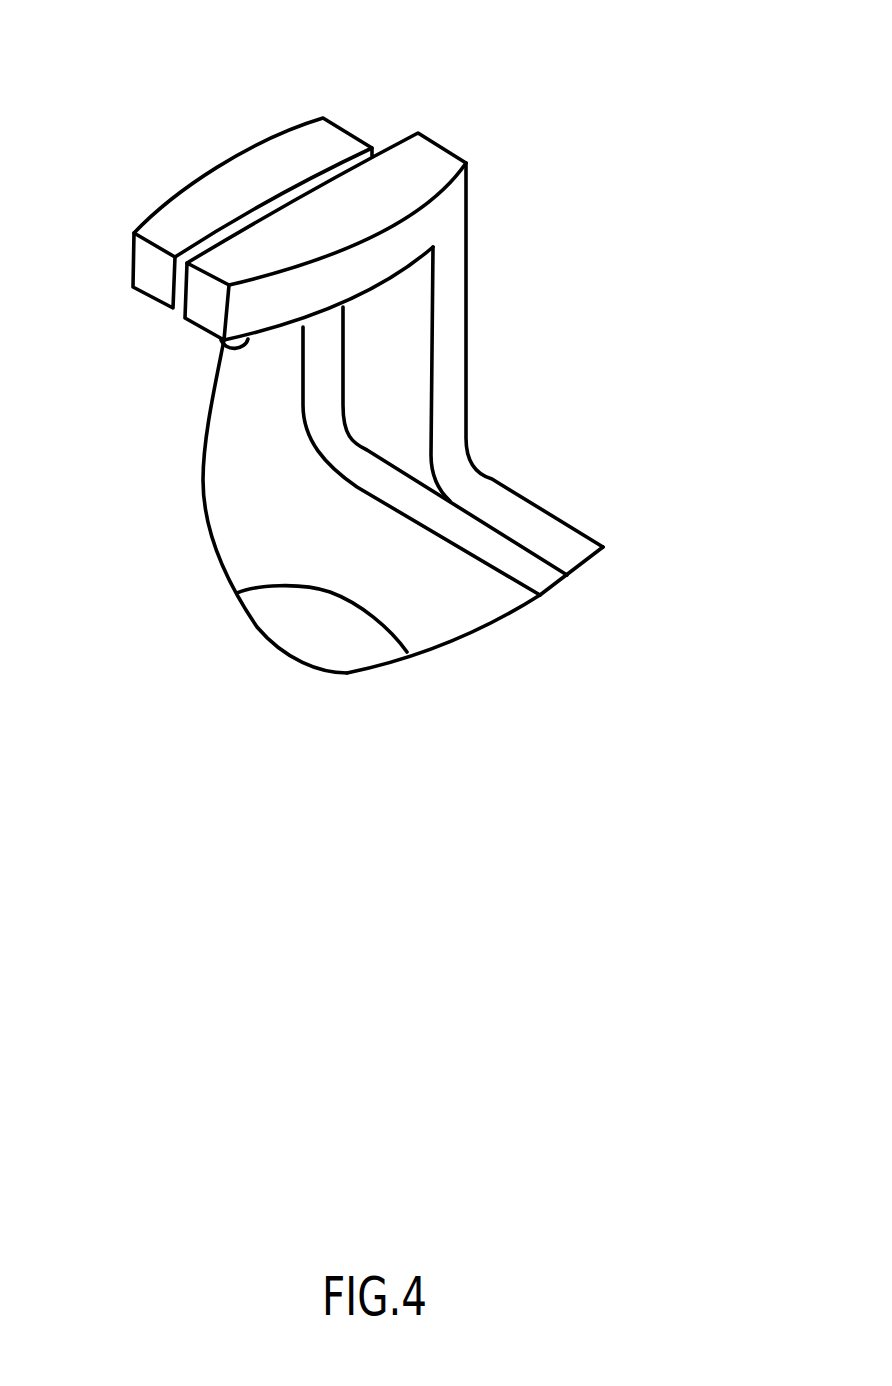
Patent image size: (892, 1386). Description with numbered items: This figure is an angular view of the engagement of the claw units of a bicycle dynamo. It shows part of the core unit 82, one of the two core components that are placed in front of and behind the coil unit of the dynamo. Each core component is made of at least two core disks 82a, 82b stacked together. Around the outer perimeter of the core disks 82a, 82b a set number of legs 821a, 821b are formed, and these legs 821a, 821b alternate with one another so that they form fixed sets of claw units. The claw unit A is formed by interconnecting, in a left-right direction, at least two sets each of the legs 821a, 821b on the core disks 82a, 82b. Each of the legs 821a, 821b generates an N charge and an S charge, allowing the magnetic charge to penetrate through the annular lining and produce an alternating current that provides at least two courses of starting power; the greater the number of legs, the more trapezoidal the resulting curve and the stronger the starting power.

The core unit 82 is at (442, 446).
The core disk 82a is at (535, 567).
The core disk 82b is at (550, 512).
The leg 821a is at (293, 152).
The leg 821b is at (417, 153).
The claw unit A is at (212, 340).